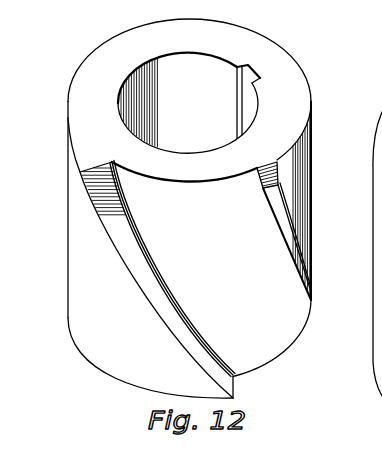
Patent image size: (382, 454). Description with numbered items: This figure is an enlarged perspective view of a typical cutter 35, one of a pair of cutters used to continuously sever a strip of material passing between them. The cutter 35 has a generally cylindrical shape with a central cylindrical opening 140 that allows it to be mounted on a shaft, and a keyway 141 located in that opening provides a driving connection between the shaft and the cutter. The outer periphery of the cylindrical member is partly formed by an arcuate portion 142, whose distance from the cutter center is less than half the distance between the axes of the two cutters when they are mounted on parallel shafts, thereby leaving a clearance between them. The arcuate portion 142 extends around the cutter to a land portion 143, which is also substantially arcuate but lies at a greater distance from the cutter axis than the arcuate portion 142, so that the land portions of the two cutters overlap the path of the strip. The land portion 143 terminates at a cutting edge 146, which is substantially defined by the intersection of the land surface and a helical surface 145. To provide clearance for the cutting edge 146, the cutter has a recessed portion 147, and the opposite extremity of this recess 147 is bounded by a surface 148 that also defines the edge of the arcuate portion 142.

The cutter 35 is at (310, 41).
The cylindrical opening 140 is at (214, 88).
The keyway 141 is at (258, 76).
The arcuate portion 142 is at (300, 200).
The land portion 143 is at (77, 233).
The helical surface 145 is at (190, 352).
The cutting edge 146 is at (137, 290).
The recessed portion 147 is at (292, 306).
The surface 148 is at (292, 243).